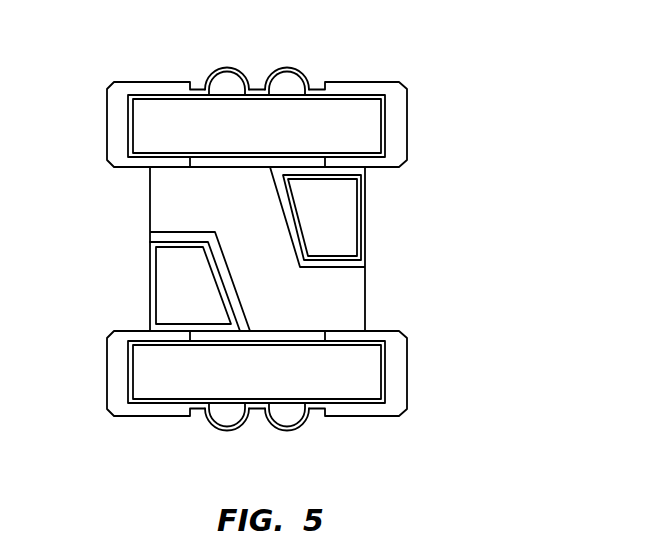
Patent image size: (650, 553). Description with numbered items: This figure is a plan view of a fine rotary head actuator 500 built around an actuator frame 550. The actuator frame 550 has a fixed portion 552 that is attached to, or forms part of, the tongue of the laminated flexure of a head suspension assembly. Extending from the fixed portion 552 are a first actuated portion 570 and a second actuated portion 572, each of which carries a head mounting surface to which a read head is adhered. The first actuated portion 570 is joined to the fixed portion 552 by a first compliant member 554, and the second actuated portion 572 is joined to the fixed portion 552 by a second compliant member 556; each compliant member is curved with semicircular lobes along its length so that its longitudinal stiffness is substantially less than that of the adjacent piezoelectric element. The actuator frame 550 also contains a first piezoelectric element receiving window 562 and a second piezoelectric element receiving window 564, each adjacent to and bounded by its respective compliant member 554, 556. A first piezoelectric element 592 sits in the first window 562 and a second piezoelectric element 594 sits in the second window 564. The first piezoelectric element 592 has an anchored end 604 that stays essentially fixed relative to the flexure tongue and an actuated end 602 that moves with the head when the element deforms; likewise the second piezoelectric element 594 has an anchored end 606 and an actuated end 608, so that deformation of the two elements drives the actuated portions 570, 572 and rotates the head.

The fine rotary head actuator 500 is at (476, 51).
The actuator frame 550 is at (397, 131).
The fixed portion 552 is at (276, 247).
The first compliant member 554 is at (293, 73).
The second compliant member 556 is at (290, 424).
The first piezoelectric element receiving window 562 is at (224, 79).
The second piezoelectric element receiving window 564 is at (223, 410).
The first actuated portion 570 is at (345, 209).
The second actuated portion 572 is at (208, 307).
The first piezoelectric element 592 is at (283, 141).
The second piezoelectric element 594 is at (283, 382).
The actuated end 602 is at (364, 110).
The anchored end 604 is at (150, 113).
The anchored end 606 is at (367, 370).
The actuated end 608 is at (150, 370).